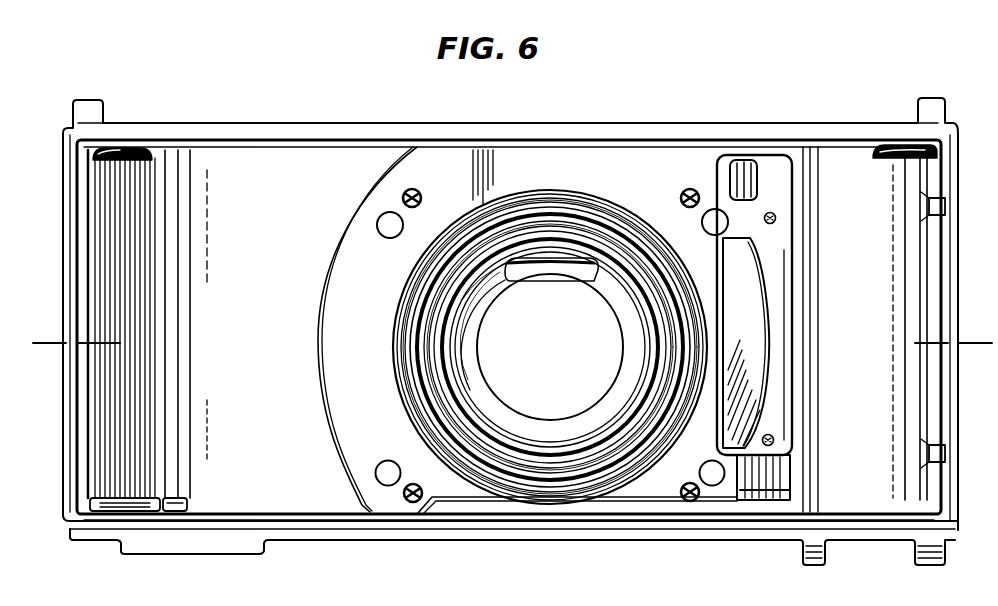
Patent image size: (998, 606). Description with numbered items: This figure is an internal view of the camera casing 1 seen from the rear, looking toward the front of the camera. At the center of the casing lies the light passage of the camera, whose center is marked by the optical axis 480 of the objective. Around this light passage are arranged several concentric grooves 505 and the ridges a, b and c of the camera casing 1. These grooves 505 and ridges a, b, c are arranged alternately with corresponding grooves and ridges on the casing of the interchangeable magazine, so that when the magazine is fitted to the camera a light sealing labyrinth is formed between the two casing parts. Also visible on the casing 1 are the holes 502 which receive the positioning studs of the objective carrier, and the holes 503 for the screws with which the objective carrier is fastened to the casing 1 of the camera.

The camera casing 1 is at (868, 127).
The optical axis of the objective 480 is at (549, 347).
The holes for the positioning studs 502 is at (390, 238).
The holes for the screws 503 is at (420, 193).
The grooves 505 is at (430, 372).
The ridge a is at (404, 333).
The ridge b is at (430, 304).
The ridge c is at (453, 288).